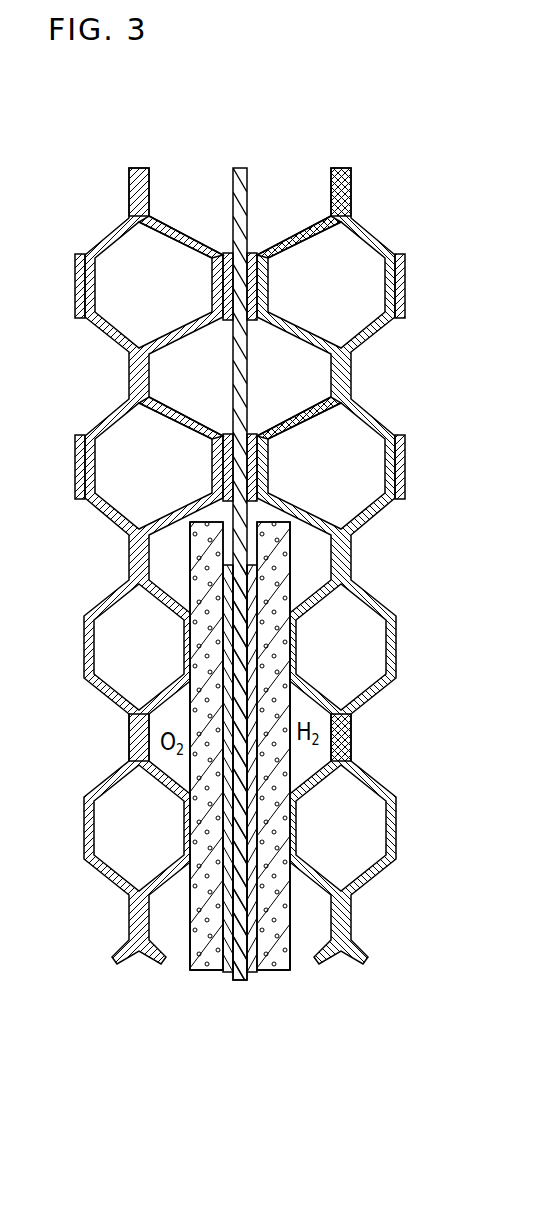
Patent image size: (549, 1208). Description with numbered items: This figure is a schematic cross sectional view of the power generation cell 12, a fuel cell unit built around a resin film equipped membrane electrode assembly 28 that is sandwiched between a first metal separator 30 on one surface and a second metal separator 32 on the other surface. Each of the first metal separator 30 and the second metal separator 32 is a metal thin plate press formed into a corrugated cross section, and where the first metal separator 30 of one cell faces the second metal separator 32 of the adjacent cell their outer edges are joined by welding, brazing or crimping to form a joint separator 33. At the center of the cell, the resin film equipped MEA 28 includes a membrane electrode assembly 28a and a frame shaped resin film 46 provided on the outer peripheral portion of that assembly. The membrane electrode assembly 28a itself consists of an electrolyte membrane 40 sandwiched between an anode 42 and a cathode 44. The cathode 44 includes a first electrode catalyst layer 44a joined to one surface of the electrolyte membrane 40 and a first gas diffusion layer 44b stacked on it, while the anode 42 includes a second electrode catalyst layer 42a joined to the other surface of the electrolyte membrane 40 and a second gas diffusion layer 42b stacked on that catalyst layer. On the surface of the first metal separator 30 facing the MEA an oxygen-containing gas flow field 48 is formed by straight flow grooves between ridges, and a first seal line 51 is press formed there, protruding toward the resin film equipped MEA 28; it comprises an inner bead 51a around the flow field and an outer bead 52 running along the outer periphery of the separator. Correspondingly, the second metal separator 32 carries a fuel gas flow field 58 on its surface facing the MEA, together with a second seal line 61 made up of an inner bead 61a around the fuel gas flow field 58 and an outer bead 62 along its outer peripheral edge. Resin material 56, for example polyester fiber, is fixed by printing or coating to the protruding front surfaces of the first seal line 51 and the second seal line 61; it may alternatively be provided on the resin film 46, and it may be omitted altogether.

The power generation cell 12 is at (258, 797).
The resin film equipped membrane electrode assembly 28 is at (242, 782).
The membrane electrode assembly 28a is at (183, 1034).
The first metal separator 30 is at (178, 226).
The second metal separator 32 is at (121, 224).
The joint separator 33 is at (192, 137).
The electrolyte membrane 40 is at (240, 986).
The anode 42 is at (273, 974).
The second electrode catalyst layer 42a is at (251, 588).
The second gas diffusion layer 42b is at (281, 647).
The cathode 44 is at (207, 974).
The first electrode catalyst layer 44a is at (230, 637).
The first gas diffusion layer 44b is at (200, 623).
The resin film 46 is at (240, 170).
The oxygen-containing gas flow field 48 is at (157, 723).
The first seal line 51 is at (186, 228).
The inner bead 51a is at (195, 421).
The outer bead 52 is at (197, 246).
The resin material 56 is at (75, 289).
The fuel gas flow field 58 is at (338, 748).
The second seal line 61 is at (294, 228).
The inner bead 61a is at (285, 421).
The outer bead 62 is at (280, 247).